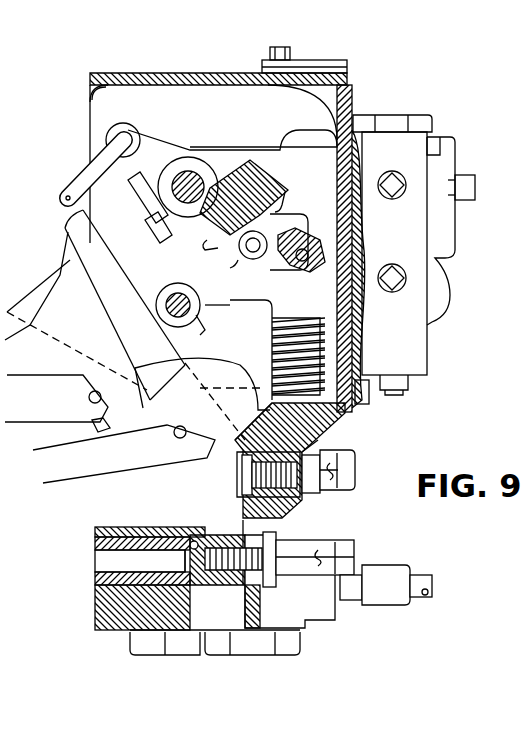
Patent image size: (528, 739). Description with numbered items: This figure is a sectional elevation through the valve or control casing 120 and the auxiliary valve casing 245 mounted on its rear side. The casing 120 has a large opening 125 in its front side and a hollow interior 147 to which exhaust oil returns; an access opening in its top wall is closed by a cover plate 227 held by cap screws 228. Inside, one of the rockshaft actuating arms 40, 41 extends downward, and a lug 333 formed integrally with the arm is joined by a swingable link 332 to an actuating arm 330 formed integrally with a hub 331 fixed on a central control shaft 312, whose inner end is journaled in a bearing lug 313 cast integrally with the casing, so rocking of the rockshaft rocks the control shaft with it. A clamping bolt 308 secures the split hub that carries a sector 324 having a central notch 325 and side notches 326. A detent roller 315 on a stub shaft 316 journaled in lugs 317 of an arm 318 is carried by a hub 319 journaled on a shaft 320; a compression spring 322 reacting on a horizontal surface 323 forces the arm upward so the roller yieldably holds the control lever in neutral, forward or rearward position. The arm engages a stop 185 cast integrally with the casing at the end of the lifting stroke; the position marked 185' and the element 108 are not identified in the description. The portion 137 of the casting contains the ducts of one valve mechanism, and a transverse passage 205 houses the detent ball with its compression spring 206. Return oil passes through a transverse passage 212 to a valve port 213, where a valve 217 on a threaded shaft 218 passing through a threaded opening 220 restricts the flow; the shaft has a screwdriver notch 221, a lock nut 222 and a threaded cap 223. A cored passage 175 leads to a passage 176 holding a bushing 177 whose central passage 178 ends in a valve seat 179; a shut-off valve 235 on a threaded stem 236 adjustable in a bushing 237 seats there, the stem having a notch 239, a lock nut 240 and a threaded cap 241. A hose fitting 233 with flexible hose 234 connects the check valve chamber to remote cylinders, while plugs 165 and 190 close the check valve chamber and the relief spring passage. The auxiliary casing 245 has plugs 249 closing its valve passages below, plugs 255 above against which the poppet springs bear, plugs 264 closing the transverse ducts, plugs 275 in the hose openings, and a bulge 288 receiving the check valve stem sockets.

The valve or control casing 120 is at (150, 72).
The large opening 125 is at (98, 96).
The cover plate 227 is at (324, 65).
The cap screw 228 is at (280, 50).
The plug 255 is at (396, 116).
The plug 264 is at (392, 180).
The plug 275 is at (468, 178).
The transverse passage 205 is at (308, 257).
The compression spring 206 is at (302, 262).
The bulge 288 is at (448, 295).
The auxiliary valve casing 245 is at (432, 350).
The plug 249 is at (405, 392).
The horizontal surface 323 is at (352, 403).
The compression spring 322 is at (320, 353).
The actuating arm 330 is at (152, 145).
The hub 331 is at (180, 162).
The central control shaft 312 is at (205, 178).
The bearing lug 313 is at (222, 154).
The swingable link 332 is at (86, 168).
The clamping bolt 308 is at (131, 197).
The lug 333 is at (75, 213).
The hollow interior 147 is at (136, 251).
The actuating arm 41 is at (104, 272).
The sector 324 is at (258, 200).
The notch 326 is at (251, 222).
The detent roller 315 is at (283, 226).
The notch 325 is at (262, 236).
The stub shaft 316 is at (253, 253).
The lug 317 is at (238, 270).
The arm 318 is at (238, 305).
The shaft 320 is at (177, 292).
The hub 319 is at (197, 323).
The stop 185 is at (194, 367).
The bracket position 185' is at (134, 376).
The actuating arm 40 is at (47, 327).
The frame member 108 is at (34, 286).
The portion of cast housing 137 is at (92, 428).
The transverse passage 212 is at (250, 443).
The valve port 213 is at (236, 462).
The valve 217 is at (240, 482).
The threaded shaft 218 is at (290, 505).
The threaded opening 220 is at (314, 458).
The notch 221 is at (340, 480).
The lock nut 222 is at (328, 478).
The threaded cap 223 is at (345, 470).
The cored passage 175 is at (192, 540).
The passage 176 is at (131, 540).
The bushing 177 is at (106, 528).
The valve seat 179 is at (165, 540).
The central passage 178 is at (95, 557).
The valve 235 is at (180, 563).
The bushing 237 is at (264, 369).
The notch 239 is at (318, 550).
The lock nut 240 is at (266, 560).
The threaded cap 241 is at (340, 556).
The hose connecting fitting 233 is at (388, 575).
The flexible hose 234 is at (428, 583).
The threaded stem 236 is at (193, 632).
The plug 190 is at (145, 652).
The plug 165 is at (292, 652).